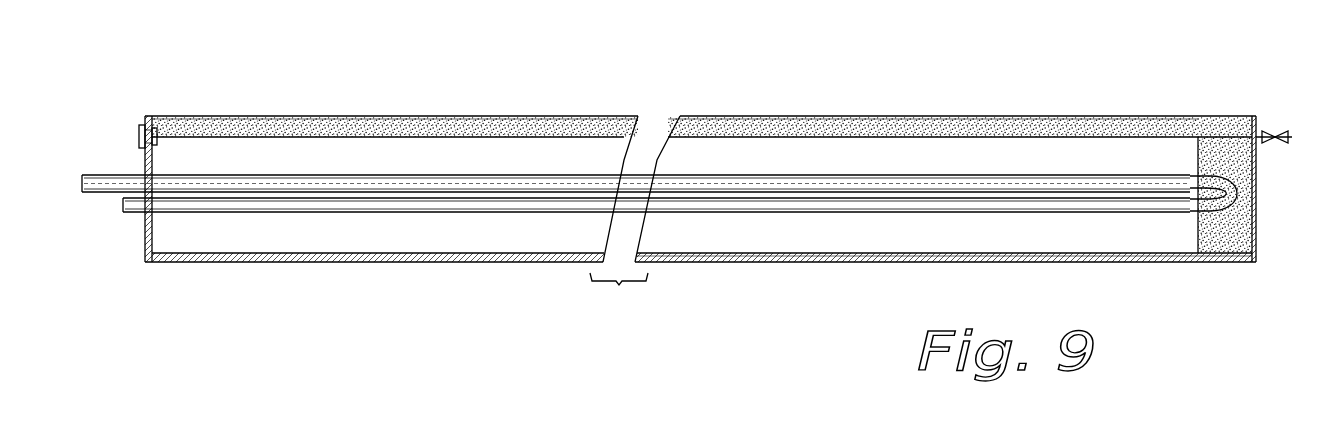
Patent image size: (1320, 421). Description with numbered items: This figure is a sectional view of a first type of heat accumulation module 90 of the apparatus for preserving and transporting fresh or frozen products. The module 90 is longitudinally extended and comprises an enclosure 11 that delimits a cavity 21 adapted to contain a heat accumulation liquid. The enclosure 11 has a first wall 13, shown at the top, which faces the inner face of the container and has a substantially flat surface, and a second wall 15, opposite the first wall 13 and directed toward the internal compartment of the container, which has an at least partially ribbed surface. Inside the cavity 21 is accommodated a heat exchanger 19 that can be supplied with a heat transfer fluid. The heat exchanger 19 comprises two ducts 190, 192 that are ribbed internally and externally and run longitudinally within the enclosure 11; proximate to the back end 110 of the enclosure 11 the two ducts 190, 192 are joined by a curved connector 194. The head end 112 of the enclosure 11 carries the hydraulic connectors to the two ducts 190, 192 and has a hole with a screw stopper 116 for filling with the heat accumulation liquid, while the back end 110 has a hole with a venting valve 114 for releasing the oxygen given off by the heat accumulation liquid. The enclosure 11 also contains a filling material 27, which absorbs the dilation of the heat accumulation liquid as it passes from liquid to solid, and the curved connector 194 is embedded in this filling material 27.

The heat accumulation module 90 is at (697, 102).
The enclosure 11 is at (483, 262).
The first wall 13 is at (842, 116).
The second wall 15 is at (815, 262).
The heat exchanger 19 is at (101, 176).
The cavity 21 is at (446, 246).
The filling material 27 is at (992, 130).
The back end 110 is at (1258, 218).
The head end 112 is at (144, 223).
The venting valve 114 is at (1270, 130).
The screw stopper 116 is at (139, 133).
The duct 190 is at (488, 185).
The duct 192 is at (518, 205).
The curved connector 194 is at (1218, 206).